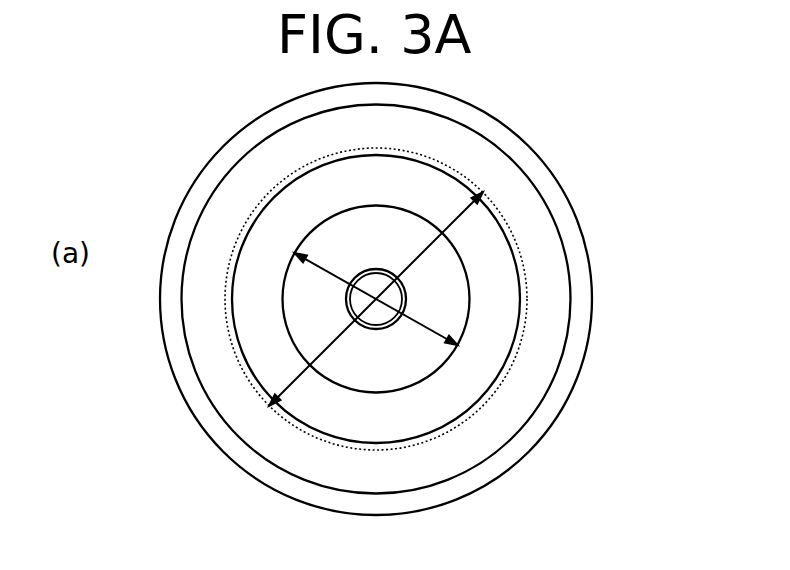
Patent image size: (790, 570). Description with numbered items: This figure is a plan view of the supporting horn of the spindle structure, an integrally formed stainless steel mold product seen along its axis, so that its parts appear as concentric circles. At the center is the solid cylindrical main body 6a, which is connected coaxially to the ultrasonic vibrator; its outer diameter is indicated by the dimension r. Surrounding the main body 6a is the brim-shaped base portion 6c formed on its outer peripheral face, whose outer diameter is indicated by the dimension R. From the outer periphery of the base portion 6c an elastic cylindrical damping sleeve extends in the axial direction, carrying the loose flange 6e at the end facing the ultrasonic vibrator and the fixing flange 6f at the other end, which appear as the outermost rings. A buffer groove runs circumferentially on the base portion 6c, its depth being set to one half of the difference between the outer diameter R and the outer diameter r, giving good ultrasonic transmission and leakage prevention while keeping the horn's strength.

The main body 6a is at (423, 357).
The base portion 6c is at (488, 235).
The loose flange 6e is at (558, 323).
The fixing flange 6f is at (242, 458).
The outer diameter of the main body r is at (333, 272).
The outer diameter of the base portion R is at (340, 337).